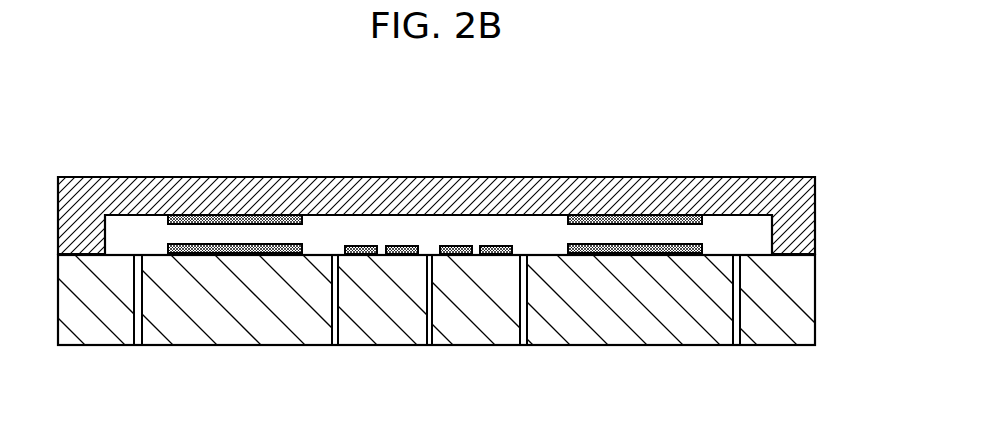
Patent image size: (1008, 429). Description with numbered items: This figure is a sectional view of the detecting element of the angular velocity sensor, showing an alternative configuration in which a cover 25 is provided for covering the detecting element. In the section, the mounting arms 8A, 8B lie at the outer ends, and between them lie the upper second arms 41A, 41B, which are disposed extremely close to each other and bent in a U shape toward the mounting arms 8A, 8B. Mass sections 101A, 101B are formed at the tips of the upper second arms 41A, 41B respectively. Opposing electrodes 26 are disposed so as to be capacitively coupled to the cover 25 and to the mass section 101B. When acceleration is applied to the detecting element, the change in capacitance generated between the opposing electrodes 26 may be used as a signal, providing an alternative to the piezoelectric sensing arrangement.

The cover 25 is at (117, 195).
The opposing electrodes 26 is at (283, 244).
The mounting arm 8B is at (112, 322).
The mass section 101B is at (210, 320).
The upper second arm 41B is at (352, 320).
The upper second arm 41A is at (483, 322).
The mass section 101A is at (580, 328).
The mounting arm 8A is at (757, 322).